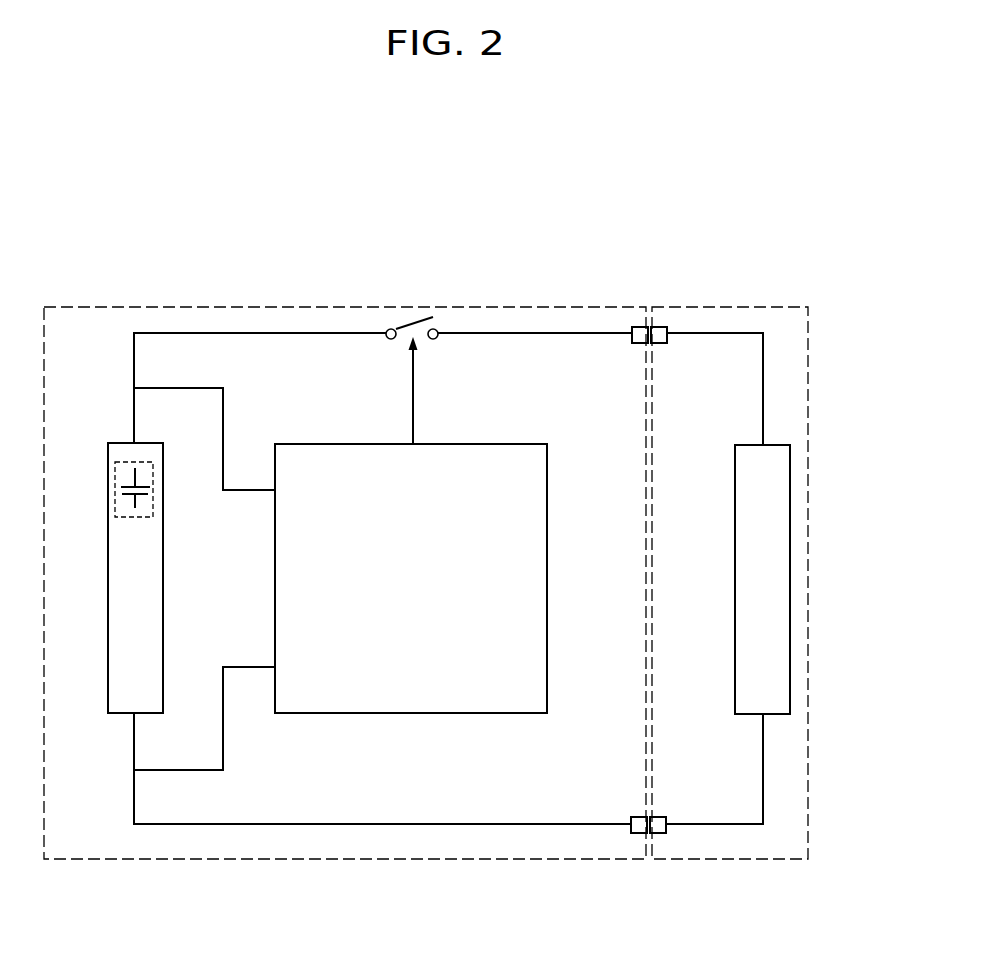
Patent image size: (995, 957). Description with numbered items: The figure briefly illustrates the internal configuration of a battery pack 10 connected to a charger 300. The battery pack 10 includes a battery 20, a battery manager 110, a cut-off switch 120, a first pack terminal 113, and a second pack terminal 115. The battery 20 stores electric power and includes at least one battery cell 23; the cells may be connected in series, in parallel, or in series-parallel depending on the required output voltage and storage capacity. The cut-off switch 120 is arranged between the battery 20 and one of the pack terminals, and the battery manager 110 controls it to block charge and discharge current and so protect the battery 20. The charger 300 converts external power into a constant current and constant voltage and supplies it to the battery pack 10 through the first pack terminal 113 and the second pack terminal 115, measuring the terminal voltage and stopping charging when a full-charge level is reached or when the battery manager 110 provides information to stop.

The battery pack 10 is at (534, 294).
The charger 300 is at (786, 297).
The battery 20 is at (140, 445).
The battery cell 23 is at (115, 488).
The battery manager 110 is at (512, 444).
The cut-off switch 120 is at (410, 323).
The first pack terminal 113 is at (645, 326).
The second pack terminal 115 is at (638, 834).